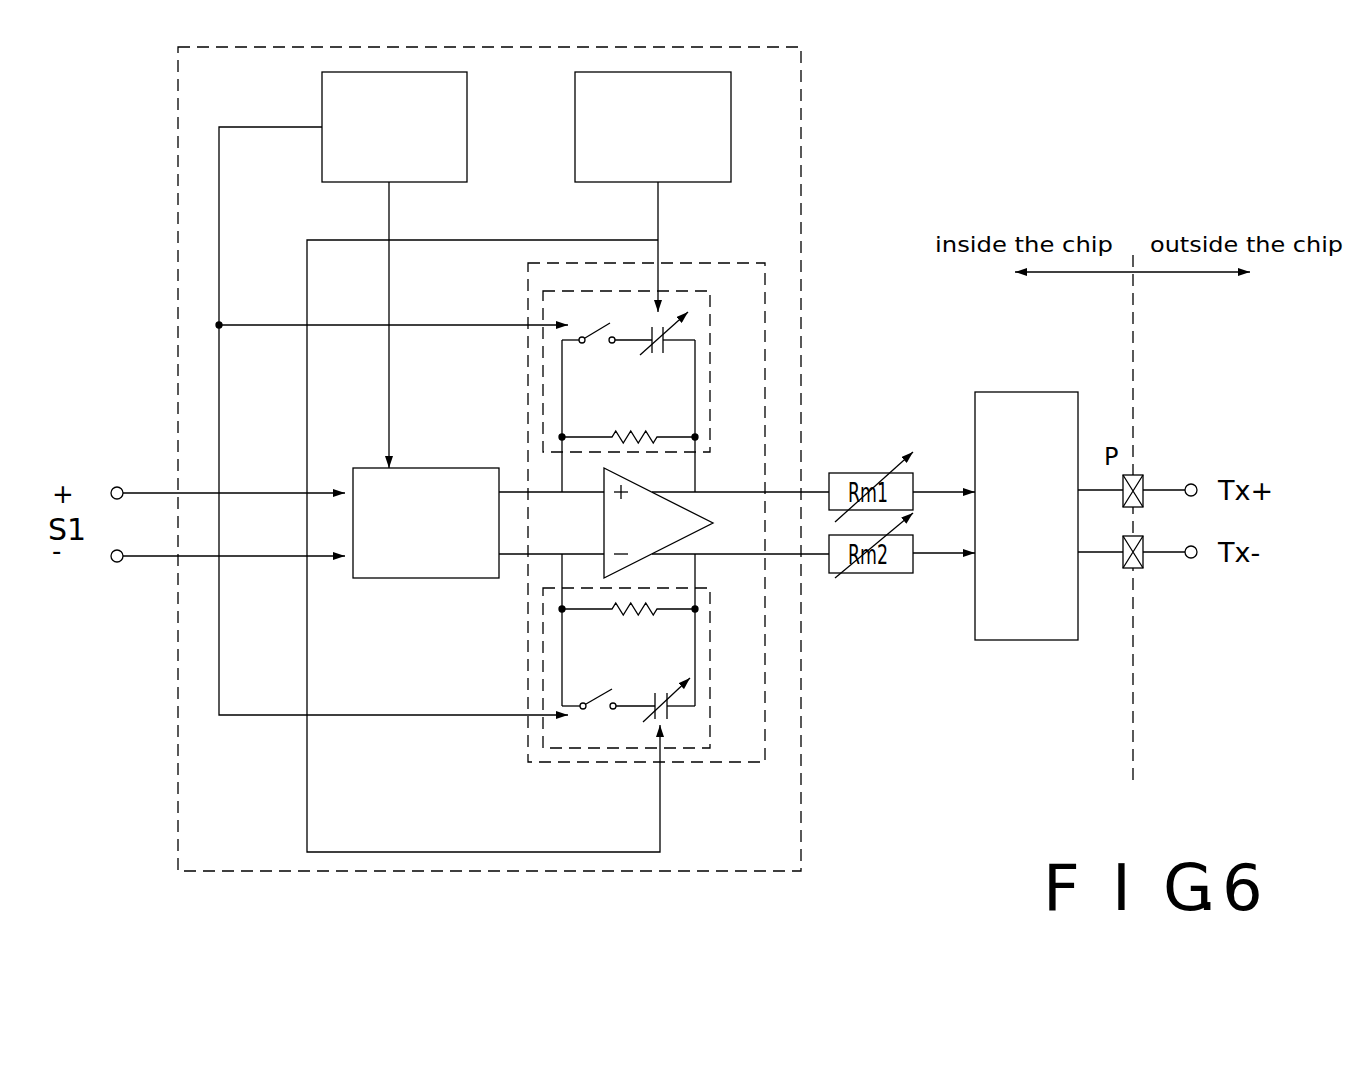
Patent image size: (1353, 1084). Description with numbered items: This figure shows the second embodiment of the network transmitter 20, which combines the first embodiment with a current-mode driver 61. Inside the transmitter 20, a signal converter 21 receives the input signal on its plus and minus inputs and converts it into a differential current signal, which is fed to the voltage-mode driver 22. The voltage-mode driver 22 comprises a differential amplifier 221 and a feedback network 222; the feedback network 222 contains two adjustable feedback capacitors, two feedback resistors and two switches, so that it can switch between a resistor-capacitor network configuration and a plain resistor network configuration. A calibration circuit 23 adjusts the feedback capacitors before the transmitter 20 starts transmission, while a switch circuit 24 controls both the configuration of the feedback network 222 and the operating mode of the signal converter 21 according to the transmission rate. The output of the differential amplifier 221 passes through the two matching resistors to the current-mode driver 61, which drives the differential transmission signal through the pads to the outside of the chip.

The transmitter 20 is at (790, 873).
The signal converter 21 is at (426, 580).
The voltage-mode driver 22 is at (640, 765).
The differential amplifier 221 is at (700, 512).
The feedback network 222 is at (543, 362).
The calibration circuit 23 is at (716, 183).
The switch circuit 24 is at (460, 183).
The current-mode driver 61 is at (1017, 640).